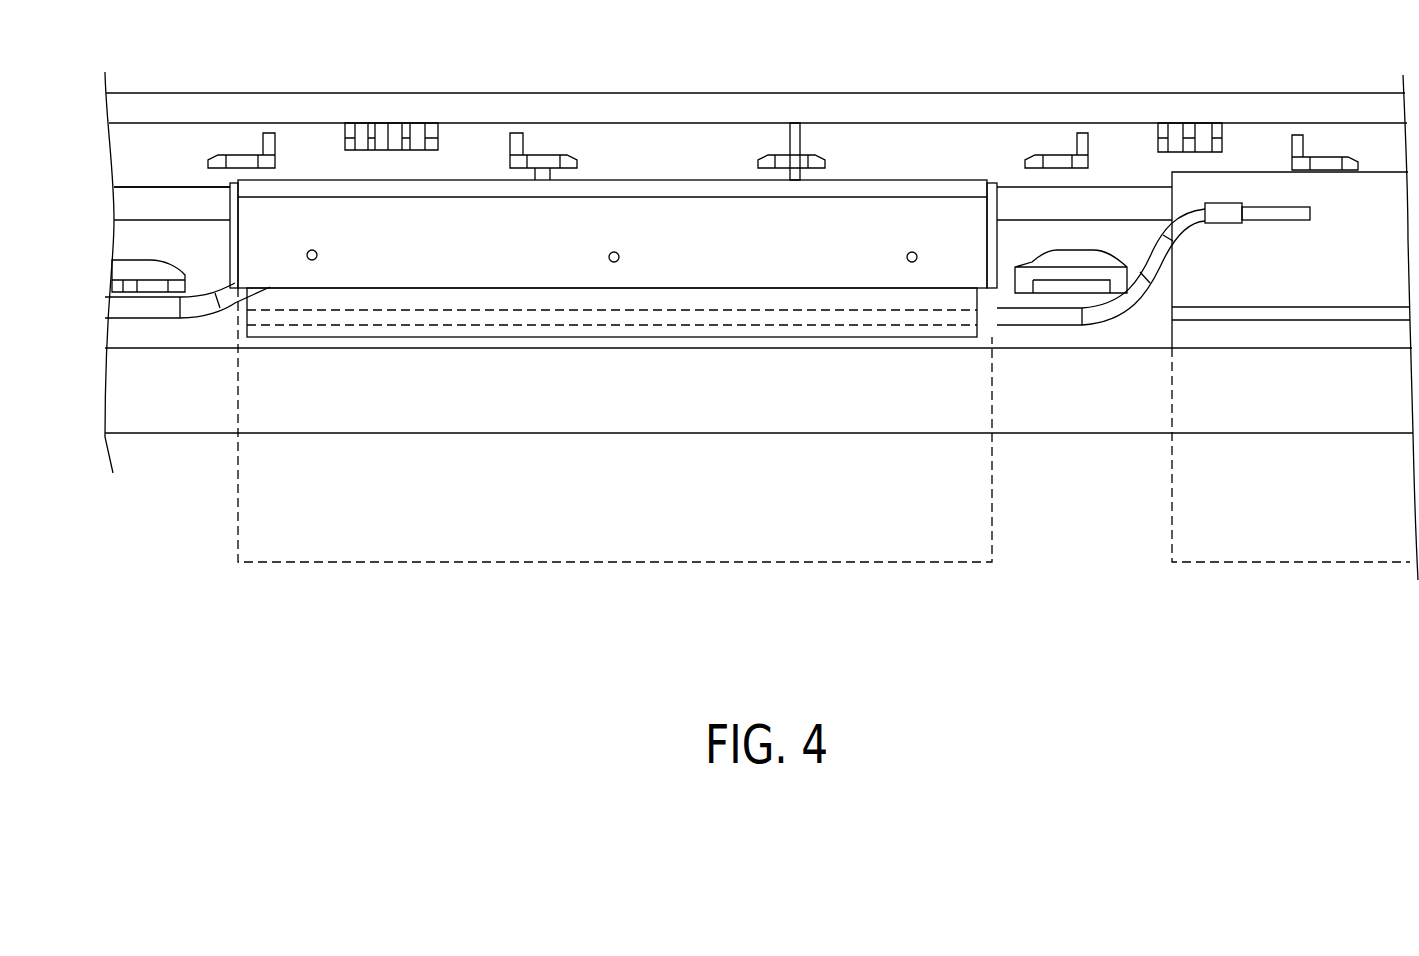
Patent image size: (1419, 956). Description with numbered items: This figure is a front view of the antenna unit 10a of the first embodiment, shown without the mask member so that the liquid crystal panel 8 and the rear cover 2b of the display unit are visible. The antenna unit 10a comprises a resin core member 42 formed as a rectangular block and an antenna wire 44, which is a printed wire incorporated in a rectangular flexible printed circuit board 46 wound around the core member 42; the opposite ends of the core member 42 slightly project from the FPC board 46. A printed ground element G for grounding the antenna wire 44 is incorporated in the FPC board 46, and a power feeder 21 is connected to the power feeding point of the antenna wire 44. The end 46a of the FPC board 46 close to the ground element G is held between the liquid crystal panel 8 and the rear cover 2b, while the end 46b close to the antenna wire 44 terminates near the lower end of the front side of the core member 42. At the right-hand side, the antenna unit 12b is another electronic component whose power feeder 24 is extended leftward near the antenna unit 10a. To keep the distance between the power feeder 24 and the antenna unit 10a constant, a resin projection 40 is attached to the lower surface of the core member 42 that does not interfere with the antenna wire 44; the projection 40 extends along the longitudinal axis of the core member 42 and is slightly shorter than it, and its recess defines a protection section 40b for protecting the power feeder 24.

The rear cover 2b is at (440, 105).
The antenna unit 10a is at (688, 158).
The antenna unit 12b is at (1260, 167).
The core member 42 is at (232, 240).
The power feeder 21 is at (197, 285).
The flexible printed circuit board 46 is at (573, 221).
The antenna wire 44 is at (612, 234).
The projection 40 is at (612, 319).
The end of the FPC board 46b is at (480, 290).
The protection section 40b is at (707, 340).
The end of the FPC board 46a is at (657, 550).
The ground element G is at (641, 455).
The power feeder 24 is at (1100, 300).
The liquid crystal panel 8 is at (1320, 348).